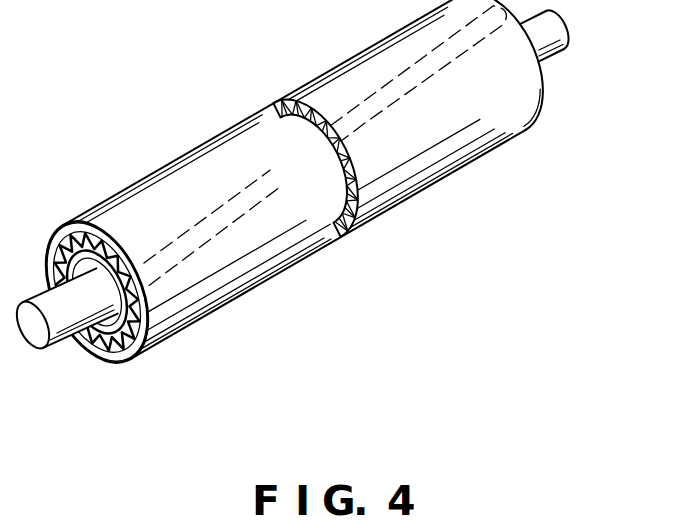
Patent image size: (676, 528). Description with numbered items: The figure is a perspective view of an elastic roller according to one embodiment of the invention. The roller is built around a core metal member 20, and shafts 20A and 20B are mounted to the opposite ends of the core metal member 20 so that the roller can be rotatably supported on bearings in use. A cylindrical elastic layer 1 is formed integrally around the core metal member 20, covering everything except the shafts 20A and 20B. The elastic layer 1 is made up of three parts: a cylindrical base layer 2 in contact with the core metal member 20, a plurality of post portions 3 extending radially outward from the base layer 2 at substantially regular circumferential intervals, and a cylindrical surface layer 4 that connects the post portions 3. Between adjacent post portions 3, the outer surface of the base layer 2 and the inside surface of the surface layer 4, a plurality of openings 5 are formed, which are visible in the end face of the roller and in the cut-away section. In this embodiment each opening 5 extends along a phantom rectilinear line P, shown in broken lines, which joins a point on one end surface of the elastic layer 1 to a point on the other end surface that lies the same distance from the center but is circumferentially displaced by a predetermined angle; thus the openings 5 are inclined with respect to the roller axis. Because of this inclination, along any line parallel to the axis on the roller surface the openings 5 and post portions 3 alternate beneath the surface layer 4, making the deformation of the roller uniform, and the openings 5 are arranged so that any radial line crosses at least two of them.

The elastic layer 1 is at (128, 333).
The base layer 2 is at (122, 331).
The post portions 3 is at (136, 329).
The surface layer 4 is at (152, 327).
The openings 5 is at (140, 258).
The core metal member 20 is at (115, 363).
The shaft 20A is at (557, 47).
The shaft 20B is at (62, 338).
The phantom rectilinear line P is at (349, 112).